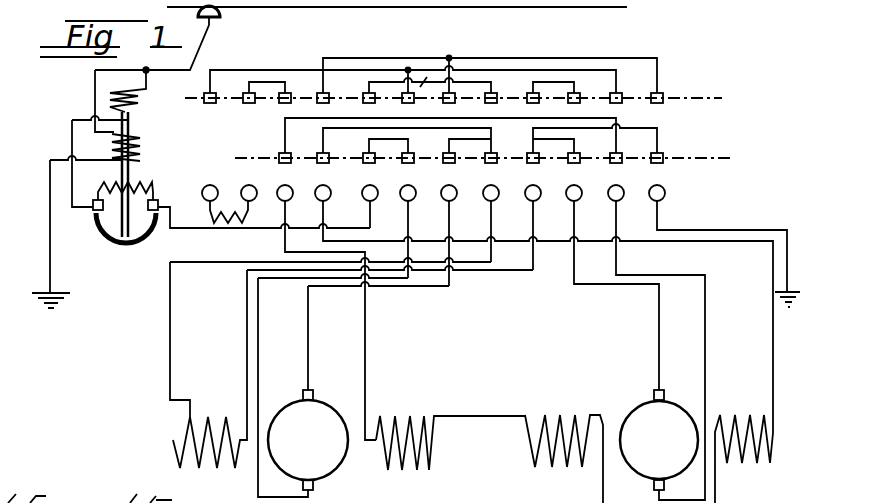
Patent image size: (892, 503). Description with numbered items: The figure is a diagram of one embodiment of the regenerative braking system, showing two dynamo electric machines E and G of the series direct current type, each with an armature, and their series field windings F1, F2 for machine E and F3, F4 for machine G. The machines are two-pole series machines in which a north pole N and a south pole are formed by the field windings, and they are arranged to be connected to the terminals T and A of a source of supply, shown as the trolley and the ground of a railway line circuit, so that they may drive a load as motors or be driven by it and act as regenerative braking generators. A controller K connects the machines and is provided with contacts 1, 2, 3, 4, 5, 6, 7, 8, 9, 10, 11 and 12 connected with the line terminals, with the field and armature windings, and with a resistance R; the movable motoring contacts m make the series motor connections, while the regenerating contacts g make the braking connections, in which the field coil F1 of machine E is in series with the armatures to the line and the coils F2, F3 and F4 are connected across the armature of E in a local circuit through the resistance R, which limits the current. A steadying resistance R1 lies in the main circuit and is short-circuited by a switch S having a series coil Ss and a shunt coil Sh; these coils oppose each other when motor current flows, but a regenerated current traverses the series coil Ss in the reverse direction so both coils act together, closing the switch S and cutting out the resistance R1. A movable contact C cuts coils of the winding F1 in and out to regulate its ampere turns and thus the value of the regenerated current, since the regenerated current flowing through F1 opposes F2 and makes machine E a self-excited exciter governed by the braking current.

The trolley terminal T is at (577, 8).
The series coil Ss is at (139, 99).
The shunt coil Sh is at (139, 152).
The switch S is at (125, 244).
The steadying resistance R1 is at (146, 183).
The ground terminal A is at (416, 265).
The resistance R is at (229, 208).
The regenerating contacts g is at (460, 84).
The controller K is at (760, 118).
The motoring contacts m is at (493, 143).
The controller contact 1 is at (210, 186).
The controller contact 2 is at (249, 185).
The controller contact 3 is at (326, 304).
The controller contact 4 is at (544, 301).
The controller contact 5 is at (370, 198).
The controller contact 6 is at (408, 223).
The controller contact 7 is at (449, 227).
The controller contact 8 is at (491, 215).
The controller contact 9 is at (533, 219).
The controller contact 10 is at (612, 279).
The controller contact 11 is at (656, 334).
The controller contact 12 is at (657, 185).
The movable contact C is at (183, 418).
The north pole N is at (575, 403).
The dynamo electric machine E is at (303, 387).
The dynamo electric machine G is at (659, 440).
The series field winding F1 is at (208, 380).
The series field winding F2 is at (450, 457).
The series field winding F3 is at (564, 446).
The series field winding F4 is at (744, 459).